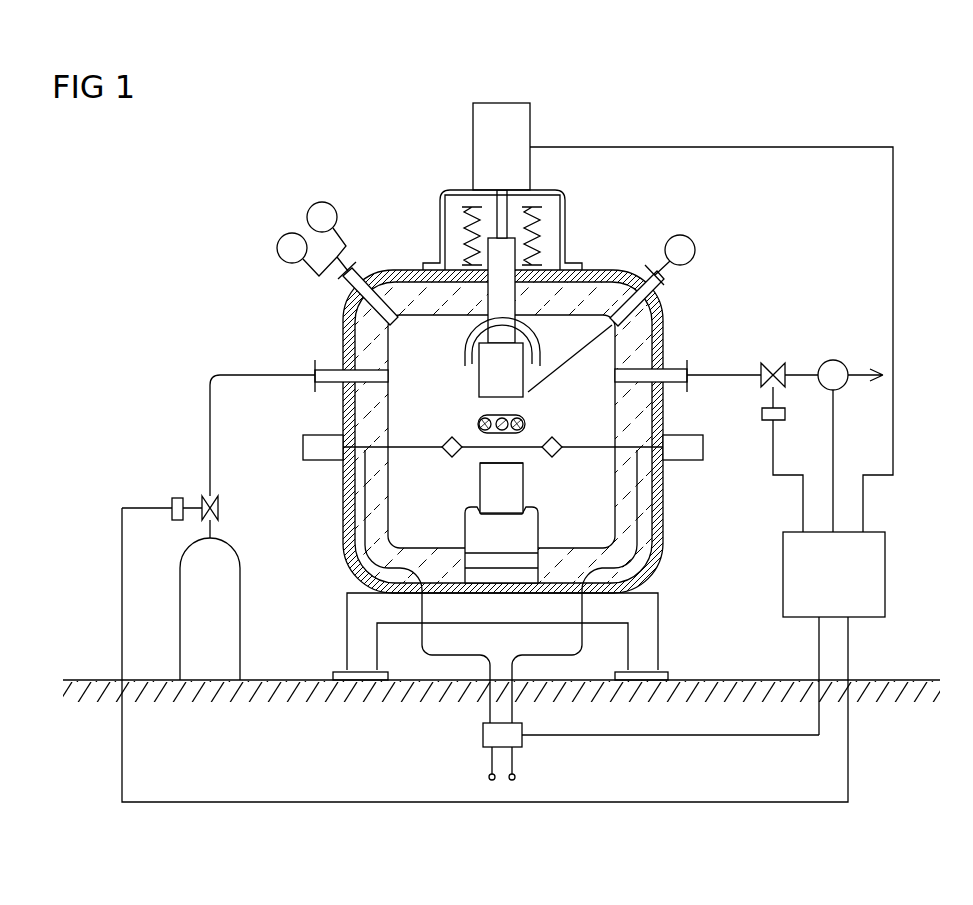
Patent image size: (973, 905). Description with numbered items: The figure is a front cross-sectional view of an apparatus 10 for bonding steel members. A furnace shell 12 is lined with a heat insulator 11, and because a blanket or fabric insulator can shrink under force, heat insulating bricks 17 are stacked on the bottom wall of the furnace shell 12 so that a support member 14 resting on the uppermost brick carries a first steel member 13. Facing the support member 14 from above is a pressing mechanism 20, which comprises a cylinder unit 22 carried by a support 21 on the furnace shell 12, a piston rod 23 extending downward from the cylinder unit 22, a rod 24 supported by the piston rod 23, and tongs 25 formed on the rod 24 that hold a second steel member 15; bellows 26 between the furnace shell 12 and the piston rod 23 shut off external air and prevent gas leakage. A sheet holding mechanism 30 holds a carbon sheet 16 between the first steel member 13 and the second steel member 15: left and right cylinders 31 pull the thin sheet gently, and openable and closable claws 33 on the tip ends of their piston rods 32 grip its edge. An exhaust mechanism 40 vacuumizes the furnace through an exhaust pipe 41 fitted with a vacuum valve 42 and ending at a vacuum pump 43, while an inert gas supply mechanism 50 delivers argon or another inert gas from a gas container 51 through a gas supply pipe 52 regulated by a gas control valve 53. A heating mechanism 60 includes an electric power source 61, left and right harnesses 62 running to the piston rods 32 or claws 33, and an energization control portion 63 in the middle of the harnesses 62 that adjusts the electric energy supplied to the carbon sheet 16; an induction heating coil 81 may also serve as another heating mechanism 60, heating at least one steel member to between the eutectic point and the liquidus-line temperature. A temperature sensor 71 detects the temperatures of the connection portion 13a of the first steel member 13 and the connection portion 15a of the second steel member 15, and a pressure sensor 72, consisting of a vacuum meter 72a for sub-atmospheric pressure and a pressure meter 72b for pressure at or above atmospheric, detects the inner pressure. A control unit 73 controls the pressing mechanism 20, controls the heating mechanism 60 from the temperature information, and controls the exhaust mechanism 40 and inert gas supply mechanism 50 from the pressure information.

The apparatus for bonding steel members 10 is at (152, 183).
The heat insulator 11 is at (349, 388).
The furnace shell 12 is at (343, 318).
The first steel member 13 is at (515, 492).
The connection portion of the first steel member 13a is at (523, 470).
The support member 14 is at (480, 535).
The second steel member 15 is at (479, 382).
The connection portion of the second steel member 15a is at (536, 390).
The carbon sheet 16 is at (470, 455).
The heat insulating brick 17 is at (507, 575).
The pressing mechanism 20 is at (550, 114).
The support 21 is at (565, 240).
The cylinder unit 22 is at (490, 160).
The piston rod 23 is at (500, 215).
The rod 24 is at (496, 320).
The tongs 25 is at (540, 342).
The bellows 26 is at (465, 245).
The sheet holding mechanism 30 is at (287, 448).
The cylinder 31 is at (326, 460).
The piston rod 32 is at (410, 447).
The openable and closable claw 33 is at (451, 438).
The exhaust mechanism 40 is at (815, 350).
The exhaust pipe 41 is at (720, 374).
The vacuum valve 42 is at (773, 362).
The vacuum pump 43 is at (838, 360).
The inert gas supply mechanism 50 is at (136, 464).
The gas container 51 is at (232, 638).
The gas supply pipe 52 is at (210, 420).
The gas control valve 53 is at (222, 508).
The heating mechanism 60 is at (410, 756).
The electric power source 61 is at (487, 777).
The harness 62 is at (465, 652).
The energization control portion 63 is at (490, 735).
The temperature sensor 71 is at (690, 240).
The pressure sensor 72 is at (293, 211).
The vacuum meter 72a is at (318, 203).
The pressure meter 72b is at (278, 245).
The control unit 73 is at (890, 572).
The induction heating coil 81 is at (480, 418).